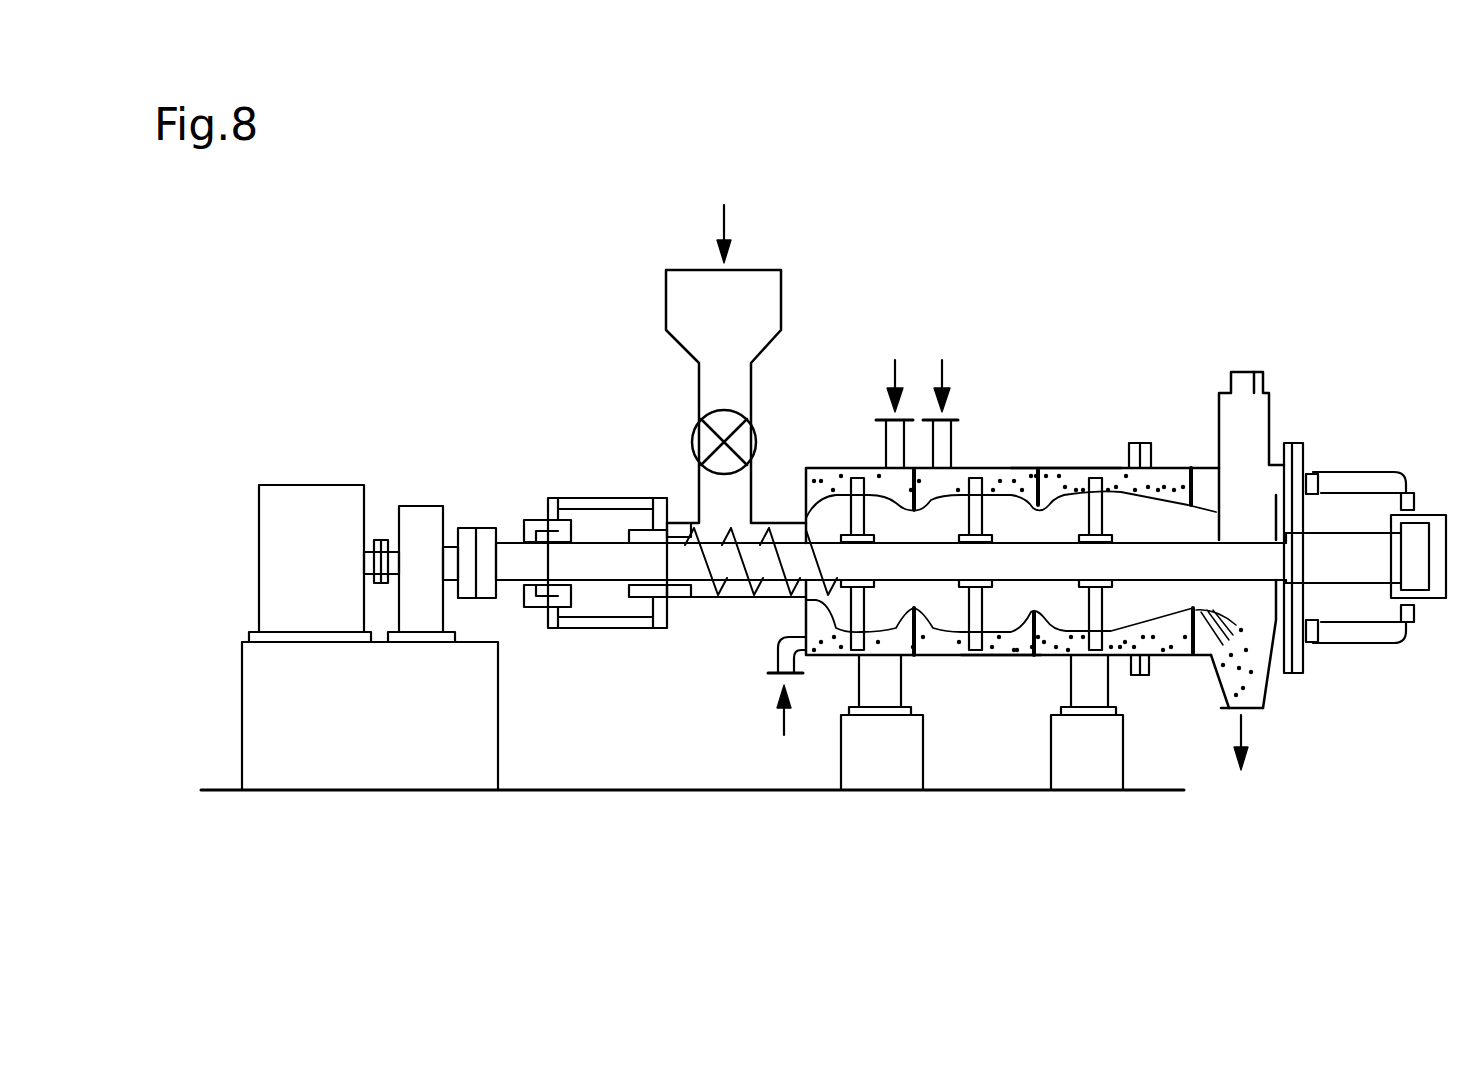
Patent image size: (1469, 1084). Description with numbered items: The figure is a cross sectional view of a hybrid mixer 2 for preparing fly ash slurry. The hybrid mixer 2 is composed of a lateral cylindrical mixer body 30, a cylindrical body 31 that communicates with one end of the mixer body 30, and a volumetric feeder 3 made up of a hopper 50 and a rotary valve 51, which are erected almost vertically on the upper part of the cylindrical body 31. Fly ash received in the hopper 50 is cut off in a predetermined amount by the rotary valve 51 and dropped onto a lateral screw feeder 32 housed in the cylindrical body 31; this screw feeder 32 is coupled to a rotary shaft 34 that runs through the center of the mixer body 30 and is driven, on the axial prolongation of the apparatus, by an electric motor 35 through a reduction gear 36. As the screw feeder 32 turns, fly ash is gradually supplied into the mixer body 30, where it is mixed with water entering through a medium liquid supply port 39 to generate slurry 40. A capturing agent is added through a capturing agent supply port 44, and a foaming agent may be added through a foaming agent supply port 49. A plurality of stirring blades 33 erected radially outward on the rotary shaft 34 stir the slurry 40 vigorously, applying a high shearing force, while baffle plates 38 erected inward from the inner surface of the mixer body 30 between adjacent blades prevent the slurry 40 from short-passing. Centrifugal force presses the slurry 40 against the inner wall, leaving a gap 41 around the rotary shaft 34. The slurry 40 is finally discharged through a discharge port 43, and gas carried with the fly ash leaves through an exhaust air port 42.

The hybrid mixer 2 is at (1131, 205).
The volumetric feeder 3 is at (522, 273).
The mixer body 30 is at (805, 468).
The cylindrical body 31 is at (695, 600).
The lateral screw feeder 32 is at (770, 598).
The stirring blades 33 is at (1000, 468).
The rotary shaft 34 is at (1052, 468).
The electric motor 35 is at (318, 485).
The reduction gear 36 is at (412, 506).
The baffle plates 38 is at (1050, 660).
The medium liquid supply port 39 is at (765, 668).
The slurry 40 is at (997, 660).
The gap 41 is at (952, 660).
The exhaust air port 42 is at (1273, 398).
The discharge port 43 is at (1258, 695).
The capturing agent supply port 44 is at (885, 450).
The foaming agent supply port 49 is at (950, 450).
The hopper 50 is at (665, 305).
The rotary valve 51 is at (695, 437).